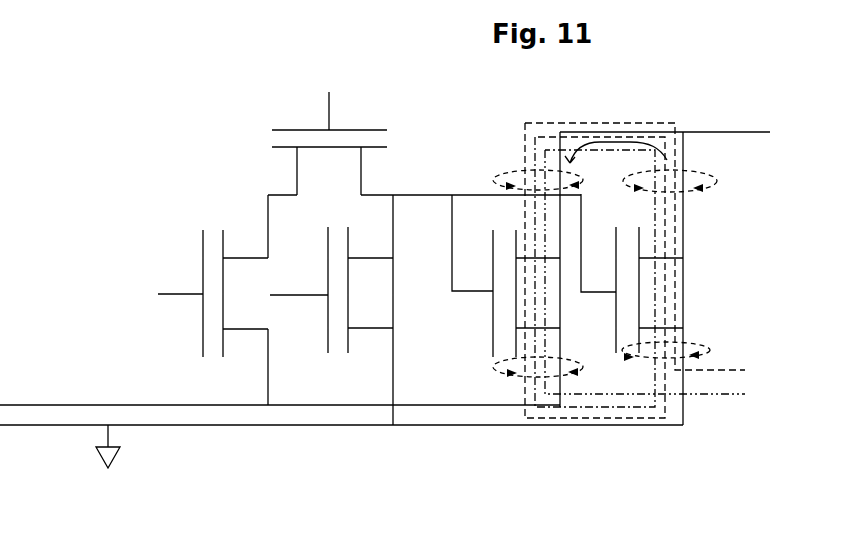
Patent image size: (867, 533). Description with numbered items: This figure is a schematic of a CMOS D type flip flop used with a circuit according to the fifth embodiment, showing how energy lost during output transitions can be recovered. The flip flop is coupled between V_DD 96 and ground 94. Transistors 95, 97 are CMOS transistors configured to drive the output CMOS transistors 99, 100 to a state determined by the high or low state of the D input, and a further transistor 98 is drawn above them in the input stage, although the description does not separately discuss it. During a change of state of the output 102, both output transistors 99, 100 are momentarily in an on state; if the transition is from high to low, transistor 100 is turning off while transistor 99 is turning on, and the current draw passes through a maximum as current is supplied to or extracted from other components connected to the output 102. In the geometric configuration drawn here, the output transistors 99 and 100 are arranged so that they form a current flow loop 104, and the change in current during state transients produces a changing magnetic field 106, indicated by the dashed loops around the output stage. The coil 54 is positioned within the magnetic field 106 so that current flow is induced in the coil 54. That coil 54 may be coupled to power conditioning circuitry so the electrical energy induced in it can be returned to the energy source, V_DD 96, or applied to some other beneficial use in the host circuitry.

The coil 54 is at (679, 300).
The ground 94 is at (253, 425).
The transistor 95 is at (372, 328).
The V_DD 96 is at (128, 405).
The transistor 97 is at (200, 272).
The transistor 98 is at (297, 130).
The output CMOS transistor 99 is at (617, 309).
The output CMOS transistor 100 is at (493, 325).
The output 102 is at (727, 132).
The current flow loop 104 is at (618, 140).
The changing magnetic field 106 is at (515, 170).